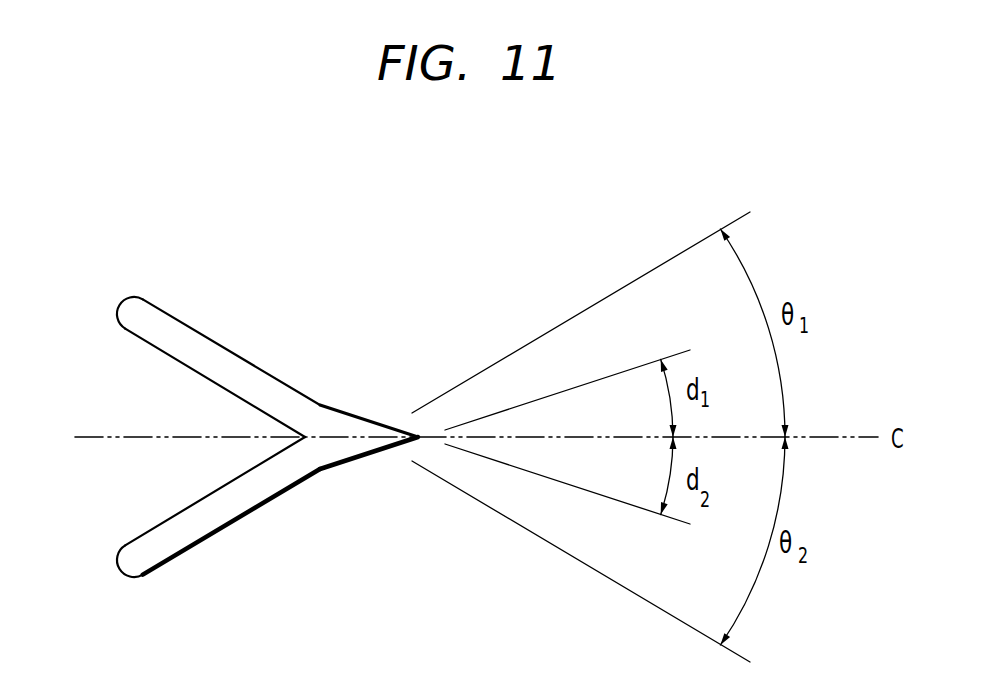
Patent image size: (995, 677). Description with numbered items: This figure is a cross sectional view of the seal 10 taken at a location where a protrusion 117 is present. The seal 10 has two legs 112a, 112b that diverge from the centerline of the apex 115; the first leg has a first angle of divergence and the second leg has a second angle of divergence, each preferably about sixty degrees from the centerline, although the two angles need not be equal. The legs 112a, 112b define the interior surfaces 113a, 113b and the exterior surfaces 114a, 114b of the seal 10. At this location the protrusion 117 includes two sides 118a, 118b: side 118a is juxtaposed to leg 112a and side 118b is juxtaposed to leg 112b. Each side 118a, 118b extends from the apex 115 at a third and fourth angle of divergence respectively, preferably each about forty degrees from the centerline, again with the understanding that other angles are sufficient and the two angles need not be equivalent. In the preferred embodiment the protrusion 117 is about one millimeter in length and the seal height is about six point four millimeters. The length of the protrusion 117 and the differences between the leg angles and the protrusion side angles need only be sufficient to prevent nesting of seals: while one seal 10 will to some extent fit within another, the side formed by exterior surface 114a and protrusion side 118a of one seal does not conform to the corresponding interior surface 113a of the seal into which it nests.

The seal 10 is at (128, 236).
The leg 112a is at (117, 305).
The leg 112b is at (117, 558).
The interior surface 113a is at (162, 355).
The interior surface 113b is at (190, 508).
The exterior surface 114a is at (173, 322).
The exterior surface 114b is at (205, 543).
The apex 115 is at (320, 312).
The protrusion 117 is at (392, 488).
The side 118a is at (358, 413).
The side 118b is at (350, 468).